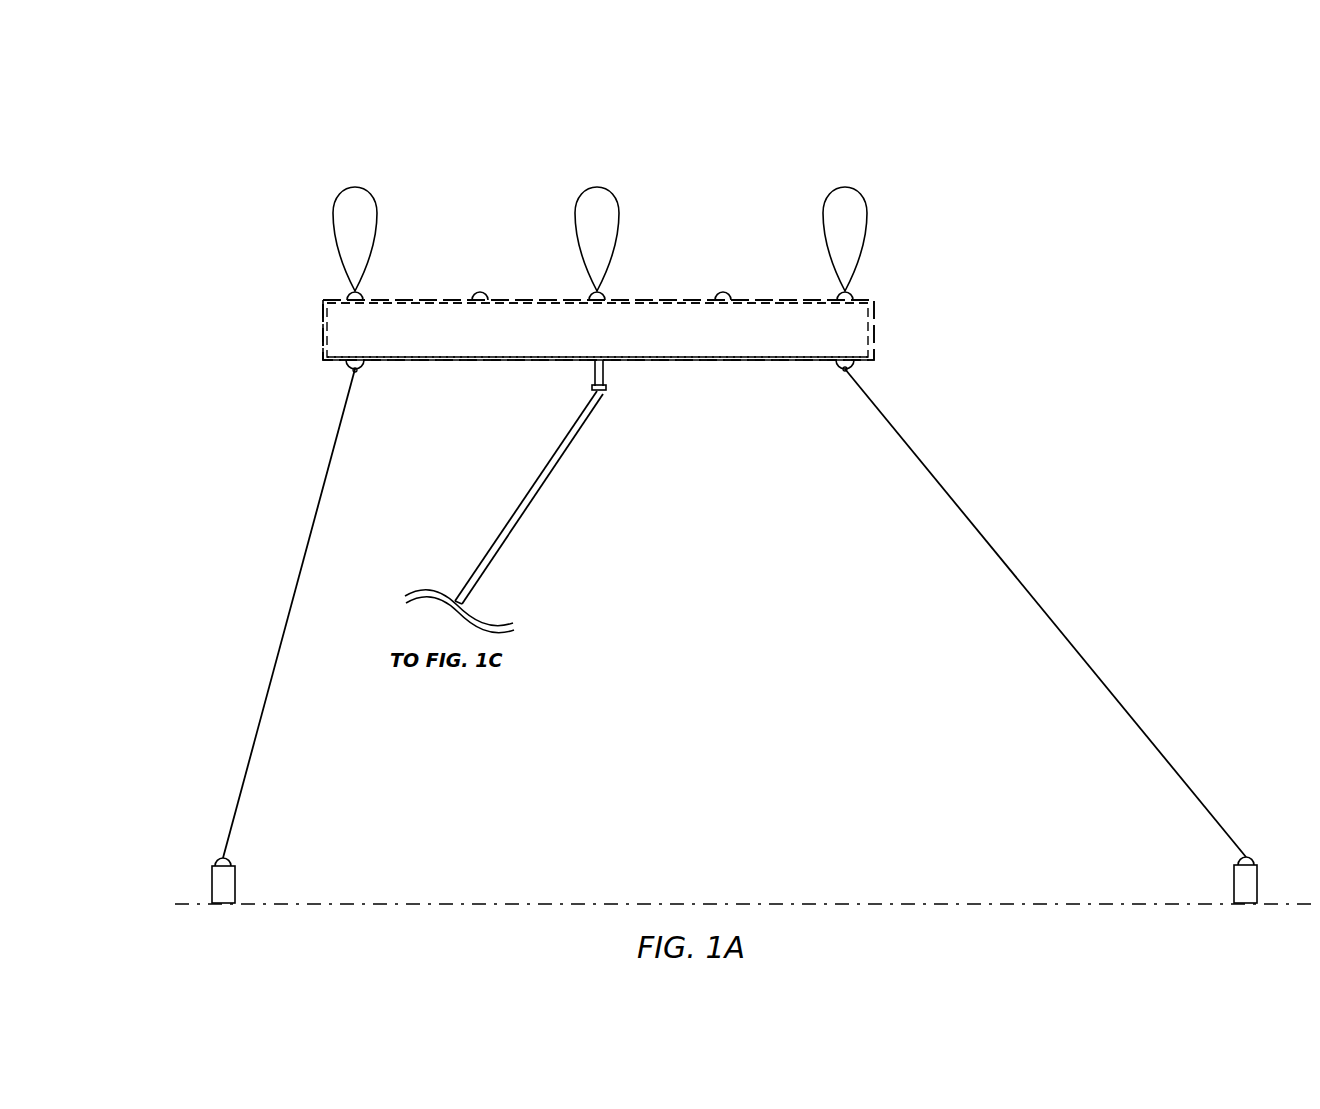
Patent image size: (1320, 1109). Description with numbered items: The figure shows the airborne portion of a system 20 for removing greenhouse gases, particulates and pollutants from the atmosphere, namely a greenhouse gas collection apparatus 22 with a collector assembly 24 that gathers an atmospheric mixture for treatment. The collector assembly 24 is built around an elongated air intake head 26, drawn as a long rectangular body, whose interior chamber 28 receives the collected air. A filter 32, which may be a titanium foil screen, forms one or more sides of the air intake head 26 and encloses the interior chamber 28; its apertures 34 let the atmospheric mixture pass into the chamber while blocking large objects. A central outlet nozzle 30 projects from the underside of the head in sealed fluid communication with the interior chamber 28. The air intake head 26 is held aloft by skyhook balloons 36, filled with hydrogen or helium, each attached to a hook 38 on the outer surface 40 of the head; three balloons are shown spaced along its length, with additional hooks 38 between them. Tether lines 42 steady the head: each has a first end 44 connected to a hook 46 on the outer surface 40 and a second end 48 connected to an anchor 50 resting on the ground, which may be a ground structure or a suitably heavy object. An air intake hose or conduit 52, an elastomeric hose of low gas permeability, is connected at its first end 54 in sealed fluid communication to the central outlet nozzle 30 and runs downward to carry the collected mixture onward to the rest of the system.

The system 20 is at (1008, 322).
The greenhouse gas collection apparatus 22 is at (890, 311).
The collector assembly 24 is at (480, 393).
The air intake head 26 is at (323, 329).
The interior chamber 28 is at (678, 330).
The central outlet nozzle 30 is at (604, 378).
The filter 32 is at (386, 299).
The apertures 34 is at (777, 350).
The skyhook balloons 36 is at (375, 206).
The hooks 38 is at (345, 292).
The outer surface 40 is at (653, 298).
The tether lines 42 is at (311, 528).
The first end 44 is at (351, 381).
The hooks 46 is at (361, 373).
The second end 48 is at (227, 838).
The anchor 50 is at (236, 874).
The air intake hose or conduit 52 is at (537, 499).
The first end 54 is at (598, 402).